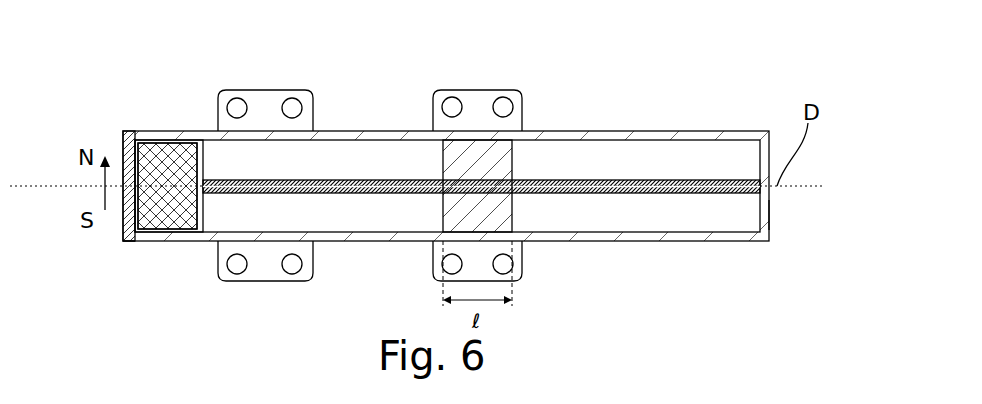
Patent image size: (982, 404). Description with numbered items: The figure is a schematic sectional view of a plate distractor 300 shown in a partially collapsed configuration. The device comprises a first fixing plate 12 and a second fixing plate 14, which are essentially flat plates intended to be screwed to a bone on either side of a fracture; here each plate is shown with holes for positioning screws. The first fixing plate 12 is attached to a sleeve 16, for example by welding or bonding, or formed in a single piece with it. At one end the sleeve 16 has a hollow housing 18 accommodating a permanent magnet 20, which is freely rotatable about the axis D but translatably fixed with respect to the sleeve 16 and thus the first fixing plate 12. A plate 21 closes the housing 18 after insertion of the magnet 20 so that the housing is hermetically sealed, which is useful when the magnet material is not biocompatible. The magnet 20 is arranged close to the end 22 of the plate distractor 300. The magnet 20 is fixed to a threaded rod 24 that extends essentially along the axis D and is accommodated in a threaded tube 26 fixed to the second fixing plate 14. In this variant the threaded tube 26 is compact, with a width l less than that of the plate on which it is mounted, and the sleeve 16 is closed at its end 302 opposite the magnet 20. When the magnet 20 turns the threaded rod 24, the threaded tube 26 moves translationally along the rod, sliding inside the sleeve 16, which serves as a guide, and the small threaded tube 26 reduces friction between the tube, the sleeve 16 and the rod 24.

The first fixing plate 12 is at (270, 105).
The second fixing plate 14 is at (487, 100).
The sleeve 16 is at (610, 242).
The hollow housing 18 is at (180, 138).
The permanent magnet 20 is at (163, 222).
The plate 21 is at (123, 241).
The end 22 is at (116, 131).
The threaded rod 24 is at (612, 183).
The threaded tube 26 is at (488, 155).
The plate distractor 300 is at (371, 98).
The end 302 is at (770, 215).